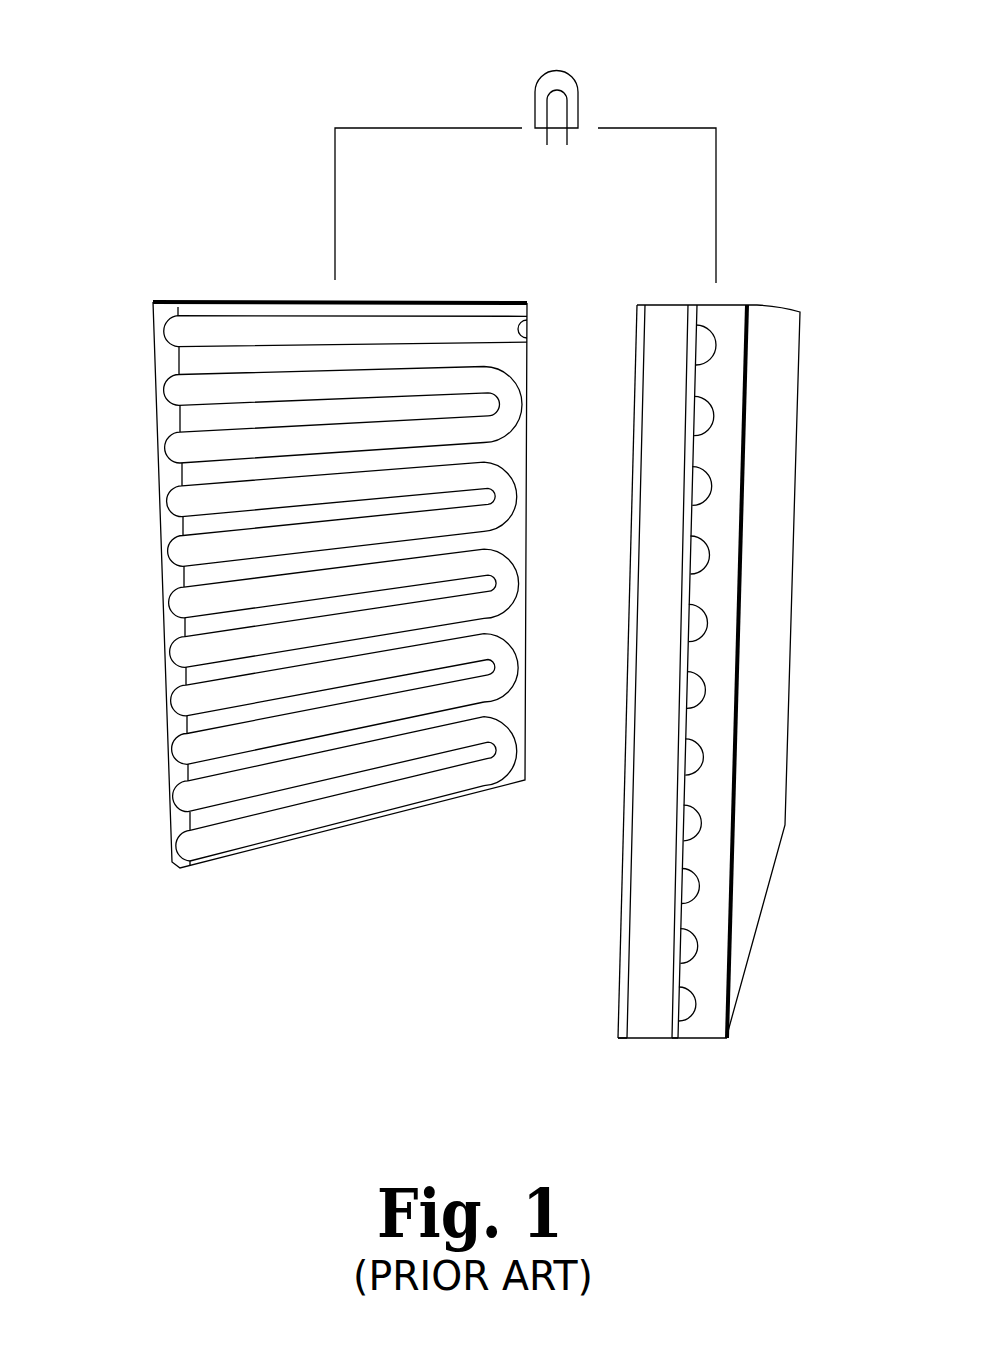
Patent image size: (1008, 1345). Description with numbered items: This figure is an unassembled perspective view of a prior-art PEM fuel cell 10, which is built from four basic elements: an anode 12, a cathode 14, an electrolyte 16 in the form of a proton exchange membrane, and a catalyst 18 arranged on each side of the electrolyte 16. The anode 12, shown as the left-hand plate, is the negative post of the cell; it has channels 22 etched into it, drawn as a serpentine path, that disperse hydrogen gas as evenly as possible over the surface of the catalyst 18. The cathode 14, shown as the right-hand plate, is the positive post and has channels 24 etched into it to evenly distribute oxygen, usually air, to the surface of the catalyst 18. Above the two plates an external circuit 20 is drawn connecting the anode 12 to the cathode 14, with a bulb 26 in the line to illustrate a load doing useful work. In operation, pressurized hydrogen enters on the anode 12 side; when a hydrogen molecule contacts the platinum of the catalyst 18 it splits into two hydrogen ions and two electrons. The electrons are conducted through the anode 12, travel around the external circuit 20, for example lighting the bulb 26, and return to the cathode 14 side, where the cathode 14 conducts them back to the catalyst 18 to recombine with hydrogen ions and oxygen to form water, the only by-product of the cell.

The PEM fuel cell 10 is at (185, 165).
The anode 12 is at (178, 683).
The cathode 14 is at (772, 680).
The electrolyte (PEM) 16 is at (653, 730).
The catalyst 18 is at (672, 1027).
The external circuit 20 is at (398, 128).
The channels 22 is at (182, 483).
The channels 24 is at (713, 350).
The bulb 26 is at (550, 72).